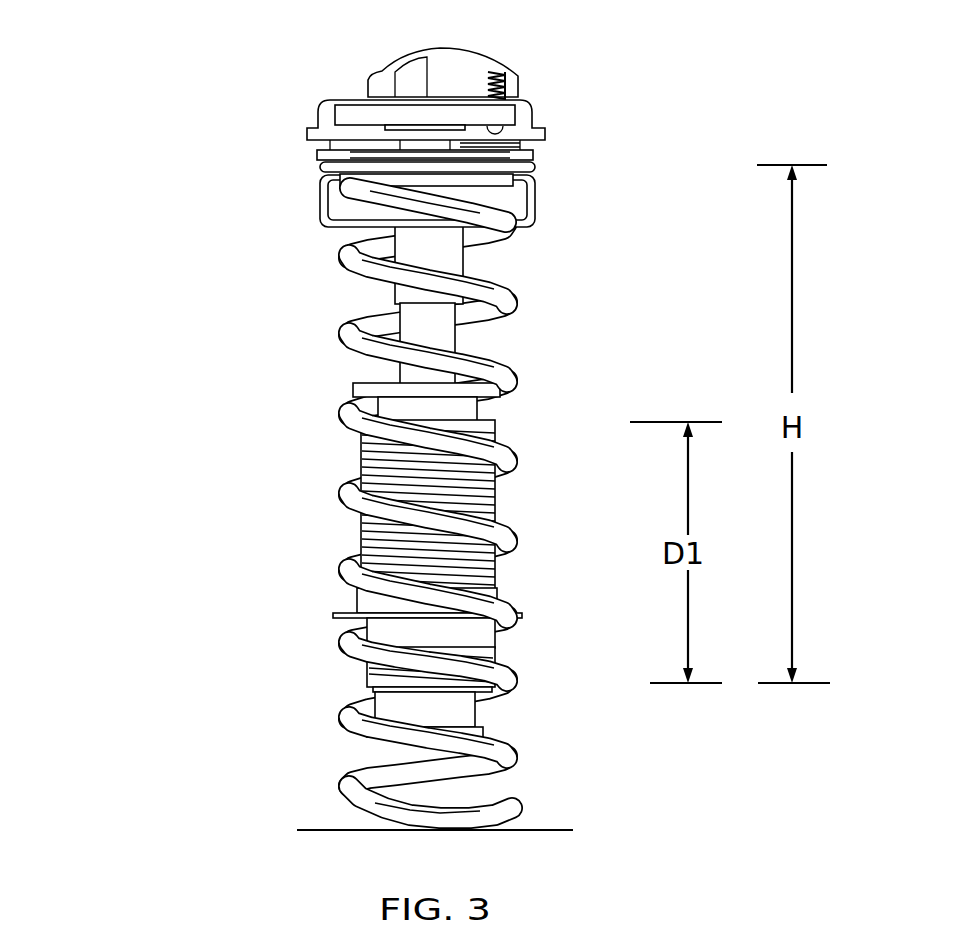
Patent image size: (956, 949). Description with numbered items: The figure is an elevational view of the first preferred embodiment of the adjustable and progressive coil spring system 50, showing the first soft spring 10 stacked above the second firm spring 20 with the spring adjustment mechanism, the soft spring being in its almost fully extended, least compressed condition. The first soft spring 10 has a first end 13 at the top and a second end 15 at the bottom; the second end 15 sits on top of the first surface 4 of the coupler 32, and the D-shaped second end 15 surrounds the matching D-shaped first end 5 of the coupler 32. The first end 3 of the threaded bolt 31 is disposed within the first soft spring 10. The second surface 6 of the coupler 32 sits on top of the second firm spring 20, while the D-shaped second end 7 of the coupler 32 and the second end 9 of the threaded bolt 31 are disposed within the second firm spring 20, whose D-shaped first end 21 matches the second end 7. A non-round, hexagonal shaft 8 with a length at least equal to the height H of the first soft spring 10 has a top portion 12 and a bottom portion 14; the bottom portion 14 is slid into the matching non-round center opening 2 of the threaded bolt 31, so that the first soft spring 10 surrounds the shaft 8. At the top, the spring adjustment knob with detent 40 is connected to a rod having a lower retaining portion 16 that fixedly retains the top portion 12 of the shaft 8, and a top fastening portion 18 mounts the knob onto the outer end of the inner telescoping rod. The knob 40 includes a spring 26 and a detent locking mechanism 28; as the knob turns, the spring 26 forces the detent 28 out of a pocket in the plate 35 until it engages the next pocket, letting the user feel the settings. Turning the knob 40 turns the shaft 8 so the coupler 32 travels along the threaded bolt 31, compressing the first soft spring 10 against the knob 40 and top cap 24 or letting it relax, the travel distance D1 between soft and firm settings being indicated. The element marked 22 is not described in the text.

The non-round shaped center opening 2 is at (400, 380).
The first end of the threaded bolt 3 is at (497, 392).
The first surface of the coupler 4 is at (338, 612).
The first end of the coupler 5 is at (508, 595).
The second surface of the coupler 6 is at (338, 620).
The second end of the coupler 7 is at (500, 656).
The non-round shaped shaft 8 is at (478, 337).
The second end of the threaded bolt 9 is at (483, 728).
The first soft spring 10 is at (493, 287).
The top portion of the non-round shaped shaft 12 is at (408, 312).
The first end of the first spring 13 is at (350, 183).
The bottom portion of the non-round shaped shaft 14 is at (403, 740).
The second end of the first spring 15 is at (530, 620).
The lower retaining portion 16 is at (445, 255).
The top fastening portion 18 is at (537, 190).
The second firm spring 20 is at (508, 760).
The first end of the second spring 21 is at (353, 651).
The thin plate 22 is at (524, 616).
The top cap 24 is at (320, 167).
The spring 26 is at (495, 72).
The detent locking mechanism 28 is at (503, 125).
The threaded bolt 31 is at (365, 468).
The coupler 32 is at (302, 615).
The plate 35 is at (545, 135).
The spring adjustment knob with detent 40 is at (520, 82).
The adjustable and progressive coil spring system 50 is at (104, 95).